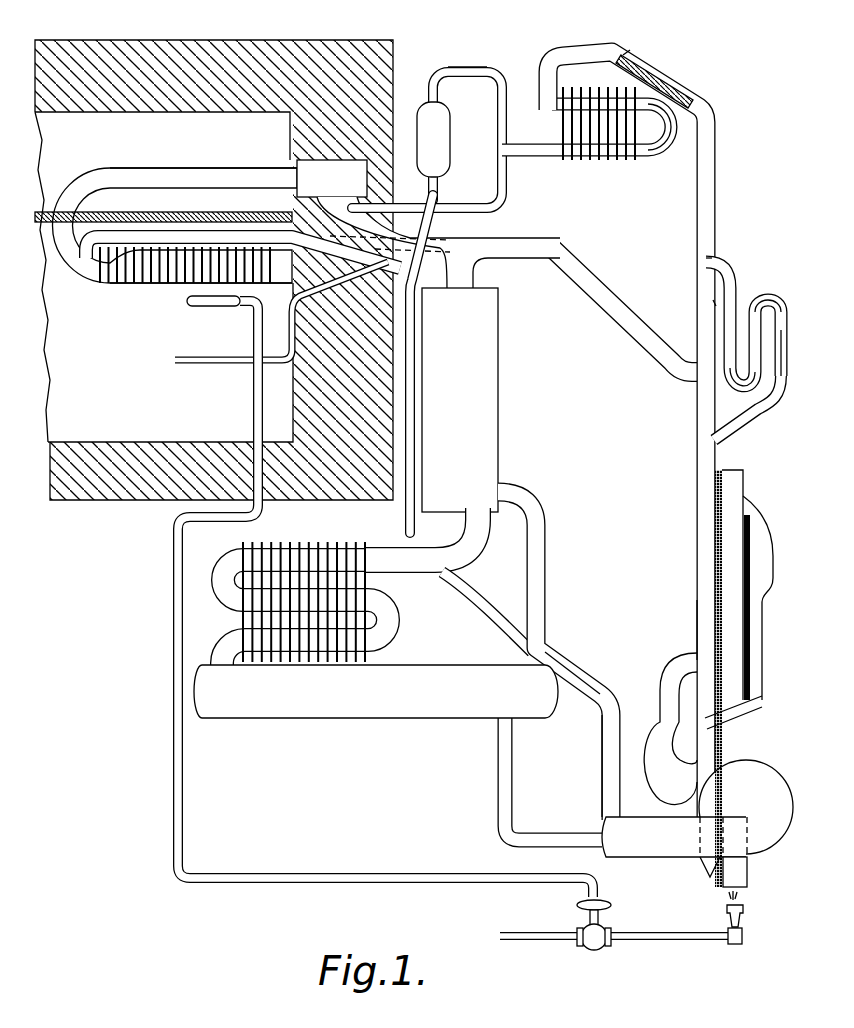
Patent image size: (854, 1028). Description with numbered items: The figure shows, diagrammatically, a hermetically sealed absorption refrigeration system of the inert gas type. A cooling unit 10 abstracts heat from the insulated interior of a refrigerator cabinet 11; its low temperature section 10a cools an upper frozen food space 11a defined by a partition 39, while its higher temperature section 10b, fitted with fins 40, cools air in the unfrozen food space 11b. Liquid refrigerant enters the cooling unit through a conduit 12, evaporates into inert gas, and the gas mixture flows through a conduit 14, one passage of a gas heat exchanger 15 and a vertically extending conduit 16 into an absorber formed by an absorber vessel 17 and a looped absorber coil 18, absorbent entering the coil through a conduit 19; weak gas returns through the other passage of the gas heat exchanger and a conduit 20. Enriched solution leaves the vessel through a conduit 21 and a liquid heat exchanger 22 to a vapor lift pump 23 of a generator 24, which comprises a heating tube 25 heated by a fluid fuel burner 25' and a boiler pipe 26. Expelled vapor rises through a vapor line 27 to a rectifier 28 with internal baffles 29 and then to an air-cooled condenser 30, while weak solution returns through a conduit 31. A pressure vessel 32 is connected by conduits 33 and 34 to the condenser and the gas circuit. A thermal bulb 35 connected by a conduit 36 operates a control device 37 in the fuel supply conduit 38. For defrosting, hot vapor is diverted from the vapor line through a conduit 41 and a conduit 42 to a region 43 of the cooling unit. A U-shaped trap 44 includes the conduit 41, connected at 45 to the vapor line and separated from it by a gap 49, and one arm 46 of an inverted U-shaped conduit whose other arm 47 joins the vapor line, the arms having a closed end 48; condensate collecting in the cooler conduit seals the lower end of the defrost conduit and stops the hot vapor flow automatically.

The cooling unit 10 is at (55, 268).
The low temperature section 10a is at (98, 167).
The higher temperature section 10b is at (92, 277).
The refrigerator cabinet 11 is at (76, 511).
The frozen food space 11a is at (182, 149).
The unfrozen food space 11b is at (162, 393).
The conduit 12 is at (508, 189).
The conduit 14 is at (289, 352).
The gas heat exchanger 15 is at (487, 427).
The vertically extending conduit 16 is at (542, 530).
The absorber vessel 17 is at (287, 707).
The absorber coil 18 is at (215, 565).
The conduit 19 is at (575, 666).
The conduit 20 is at (463, 272).
The conduit 21 is at (498, 765).
The liquid heat exchanger 22 is at (765, 830).
The vapor lift pump 23 is at (778, 629).
The generator 24 is at (686, 581).
The heating tube 25 is at (754, 688).
The fluid fuel burner 25' is at (704, 912).
The boiler pipe 26 is at (696, 630).
The vapor line 27 is at (705, 210).
The rectifier 28 is at (677, 82).
The internal baffles 29 is at (660, 63).
The condenser 30 is at (643, 163).
The conduit 31 is at (672, 667).
The pressure vessel 32 is at (452, 148).
The conduit 33 is at (479, 67).
The conduit 34 is at (405, 513).
The thermal bulb 35 is at (217, 308).
The conduit 36 is at (183, 823).
The control device 37 is at (577, 903).
The fuel supply conduit 38 is at (562, 944).
The partition 39 is at (178, 214).
The fins 40 is at (155, 282).
The conduit 41 is at (738, 290).
The conduit 42 is at (580, 272).
The region 43 is at (100, 232).
The U-shaped trap 44 is at (740, 331).
The connection 45 is at (705, 262).
The arm 46 is at (764, 367).
The arm 47 is at (796, 392).
The closed end 48 is at (775, 304).
The gap 49 is at (714, 303).